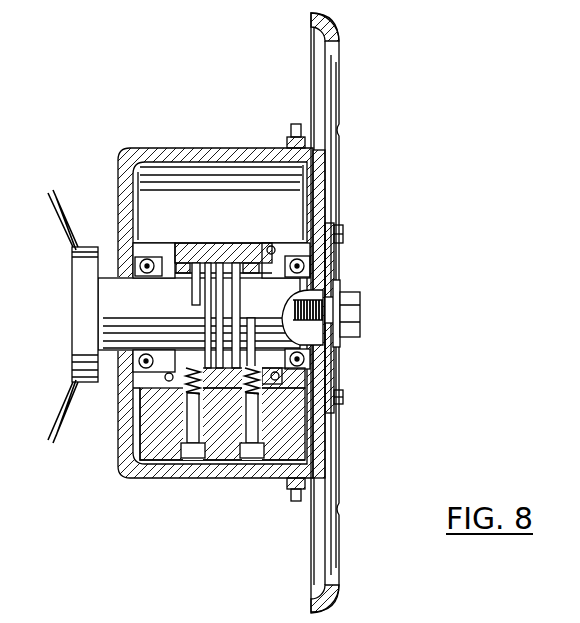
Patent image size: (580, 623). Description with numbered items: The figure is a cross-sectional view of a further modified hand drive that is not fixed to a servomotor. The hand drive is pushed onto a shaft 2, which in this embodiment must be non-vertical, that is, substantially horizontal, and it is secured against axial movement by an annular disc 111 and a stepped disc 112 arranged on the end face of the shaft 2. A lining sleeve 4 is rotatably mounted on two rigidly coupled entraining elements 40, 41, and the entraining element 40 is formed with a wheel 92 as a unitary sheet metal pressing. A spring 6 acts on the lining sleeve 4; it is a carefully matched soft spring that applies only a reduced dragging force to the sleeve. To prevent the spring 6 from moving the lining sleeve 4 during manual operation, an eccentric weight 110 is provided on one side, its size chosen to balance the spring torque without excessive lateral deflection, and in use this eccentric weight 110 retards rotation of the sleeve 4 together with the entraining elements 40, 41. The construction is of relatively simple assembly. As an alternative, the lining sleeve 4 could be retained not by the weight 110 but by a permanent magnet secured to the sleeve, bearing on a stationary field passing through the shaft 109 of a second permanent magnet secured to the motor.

The shaft 2 is at (136, 307).
The lining sleeve 4 is at (216, 244).
The spring 6 is at (194, 262).
The entraining element 40 is at (297, 259).
The entraining element 41 is at (147, 258).
The wheel 92 is at (317, 607).
The shaft of second permanent magnet 109 is at (262, 470).
The eccentric weight 110 is at (222, 450).
The annular disc 111 is at (332, 377).
The stepped disc 112 is at (338, 284).